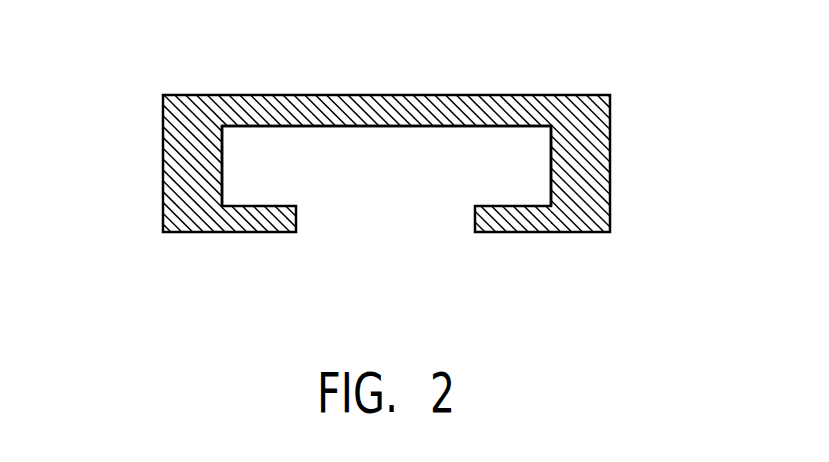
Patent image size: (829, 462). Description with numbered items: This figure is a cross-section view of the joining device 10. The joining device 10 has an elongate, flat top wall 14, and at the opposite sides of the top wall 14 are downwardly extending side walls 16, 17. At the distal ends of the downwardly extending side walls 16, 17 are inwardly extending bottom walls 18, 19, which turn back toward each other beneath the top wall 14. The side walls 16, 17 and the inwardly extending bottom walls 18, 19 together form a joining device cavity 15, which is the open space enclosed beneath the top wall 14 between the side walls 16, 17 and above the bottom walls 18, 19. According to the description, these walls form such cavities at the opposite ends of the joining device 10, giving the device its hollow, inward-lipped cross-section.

The joining device 10 is at (440, 43).
The top wall 14 is at (296, 108).
The joining device cavity 15 is at (515, 165).
The side wall 16 is at (582, 169).
The side wall 17 is at (187, 165).
The bottom wall 18 is at (505, 220).
The bottom wall 19 is at (247, 220).